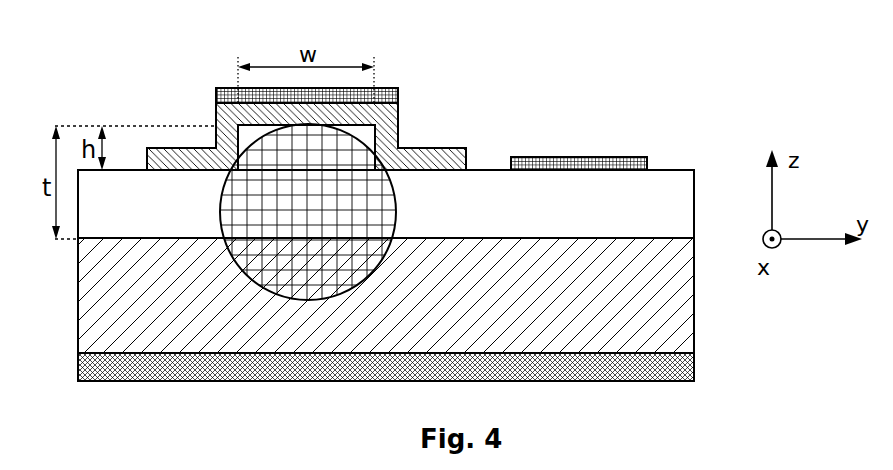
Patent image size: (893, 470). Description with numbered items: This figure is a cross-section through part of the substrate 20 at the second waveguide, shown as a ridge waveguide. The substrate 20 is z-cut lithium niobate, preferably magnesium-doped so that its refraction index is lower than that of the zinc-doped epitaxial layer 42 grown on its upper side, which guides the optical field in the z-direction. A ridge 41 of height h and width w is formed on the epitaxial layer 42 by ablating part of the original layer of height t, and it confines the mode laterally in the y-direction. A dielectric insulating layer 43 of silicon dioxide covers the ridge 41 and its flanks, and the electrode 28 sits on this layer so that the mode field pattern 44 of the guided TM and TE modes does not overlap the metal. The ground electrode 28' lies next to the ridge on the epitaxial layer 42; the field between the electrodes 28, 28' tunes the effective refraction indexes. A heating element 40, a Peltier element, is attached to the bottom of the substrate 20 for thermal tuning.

The substrate 20 is at (683, 312).
The heating element 40 is at (665, 368).
The epitaxial layer 42 is at (683, 217).
The dielectric layer 43 is at (440, 157).
The ridge 41 is at (245, 135).
The mode field pattern 44 is at (402, 202).
The electrode 28 is at (336, 77).
The electrode 28' is at (589, 142).